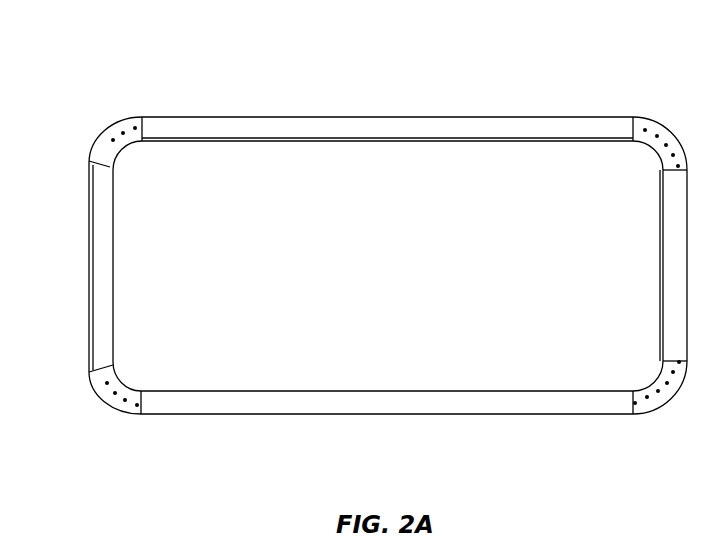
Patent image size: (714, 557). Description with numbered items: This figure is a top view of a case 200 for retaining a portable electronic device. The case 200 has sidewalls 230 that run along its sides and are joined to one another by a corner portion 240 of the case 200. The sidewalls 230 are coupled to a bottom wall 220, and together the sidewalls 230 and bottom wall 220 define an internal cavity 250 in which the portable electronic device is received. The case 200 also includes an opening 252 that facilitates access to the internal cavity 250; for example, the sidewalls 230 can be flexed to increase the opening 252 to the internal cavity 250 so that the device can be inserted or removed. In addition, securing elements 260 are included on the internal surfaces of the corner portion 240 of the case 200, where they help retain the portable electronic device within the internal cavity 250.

The case 200 is at (170, 90).
The bottom wall 220 is at (403, 289).
The internal cavity 250 is at (338, 187).
The sidewalls 230 is at (505, 117).
The opening 252 is at (103, 303).
The securing elements 260 is at (112, 153).
The corner portion 240 is at (670, 132).